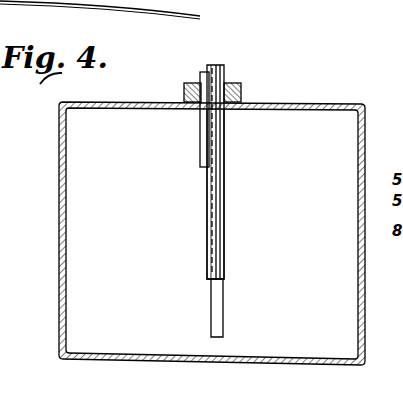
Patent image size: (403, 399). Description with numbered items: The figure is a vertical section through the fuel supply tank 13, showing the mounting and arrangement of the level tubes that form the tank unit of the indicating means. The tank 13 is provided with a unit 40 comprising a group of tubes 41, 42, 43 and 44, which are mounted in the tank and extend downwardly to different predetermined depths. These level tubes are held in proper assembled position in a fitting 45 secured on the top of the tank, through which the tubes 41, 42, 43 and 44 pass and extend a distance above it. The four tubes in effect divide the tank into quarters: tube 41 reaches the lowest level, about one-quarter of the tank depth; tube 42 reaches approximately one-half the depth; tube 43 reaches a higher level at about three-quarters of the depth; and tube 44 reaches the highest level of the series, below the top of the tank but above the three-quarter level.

The fuel supply tank 13 is at (60, 212).
The unit 40 is at (225, 125).
The tube 41 is at (218, 291).
The tube 42 is at (210, 232).
The tube 43 is at (212, 205).
The tube 44 is at (207, 135).
The fitting 45 is at (241, 93).